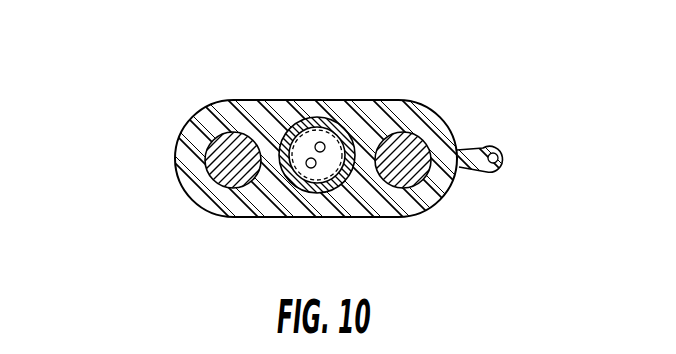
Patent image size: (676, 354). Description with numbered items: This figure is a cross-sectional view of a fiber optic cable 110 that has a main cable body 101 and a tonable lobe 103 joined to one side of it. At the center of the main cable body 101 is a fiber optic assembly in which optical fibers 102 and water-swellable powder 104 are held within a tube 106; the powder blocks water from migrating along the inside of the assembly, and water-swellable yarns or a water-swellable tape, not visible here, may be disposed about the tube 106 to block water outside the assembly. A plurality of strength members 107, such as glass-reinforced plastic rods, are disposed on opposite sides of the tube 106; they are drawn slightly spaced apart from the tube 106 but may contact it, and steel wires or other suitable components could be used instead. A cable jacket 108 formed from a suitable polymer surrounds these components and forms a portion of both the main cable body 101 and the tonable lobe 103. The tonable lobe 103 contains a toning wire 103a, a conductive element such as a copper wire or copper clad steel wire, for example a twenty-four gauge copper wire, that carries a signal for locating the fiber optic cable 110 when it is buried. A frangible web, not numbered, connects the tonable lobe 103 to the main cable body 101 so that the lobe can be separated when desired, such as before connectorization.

The fiber optic cable 110 is at (108, 114).
The main cable body 101 is at (455, 223).
The optical fibers 102 is at (312, 162).
The tonable lobe 103 is at (512, 183).
The toning wire 103a is at (500, 153).
The water-swellable powder 104 is at (289, 127).
The tube 106 is at (326, 190).
The strength members 107 is at (221, 181).
The cable jacket 108 is at (200, 165).